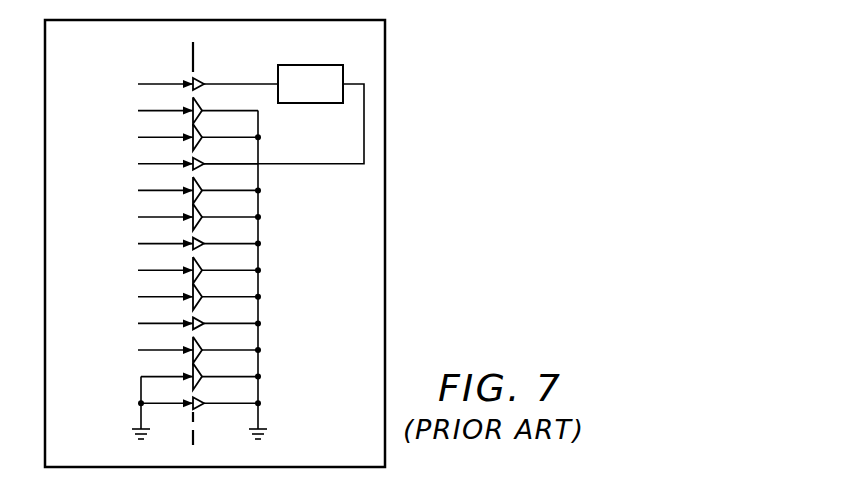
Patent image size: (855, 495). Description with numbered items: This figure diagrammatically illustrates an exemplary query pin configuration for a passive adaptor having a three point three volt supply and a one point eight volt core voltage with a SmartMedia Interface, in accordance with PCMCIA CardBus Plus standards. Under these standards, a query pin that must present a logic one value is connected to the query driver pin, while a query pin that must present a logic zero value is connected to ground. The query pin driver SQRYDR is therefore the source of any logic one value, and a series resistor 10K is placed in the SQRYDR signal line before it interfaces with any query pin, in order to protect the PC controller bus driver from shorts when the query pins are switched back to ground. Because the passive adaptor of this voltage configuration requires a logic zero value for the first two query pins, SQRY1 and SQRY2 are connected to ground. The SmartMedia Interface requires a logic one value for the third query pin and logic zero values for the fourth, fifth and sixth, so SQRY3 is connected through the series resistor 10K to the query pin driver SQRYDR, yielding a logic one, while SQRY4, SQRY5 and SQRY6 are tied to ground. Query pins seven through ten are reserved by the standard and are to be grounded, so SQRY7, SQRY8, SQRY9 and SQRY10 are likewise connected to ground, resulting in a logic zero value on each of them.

The series resistor 10K is at (284, 114).
The query pin driver SQRYDR is at (169, 85).
The query pin SQRY1 is at (168, 110).
The query pin SQRY2 is at (168, 137).
The query pin SQRY3 is at (168, 165).
The query pin SQRY4 is at (168, 190).
The query pin SQRY5 is at (168, 217).
The query pin SQRY6 is at (168, 245).
The query pin SQRY7 is at (168, 270).
The query pin SQRY8 is at (168, 297).
The query pin SQRY9 is at (168, 324).
The query pin SQRY10 is at (162, 350).